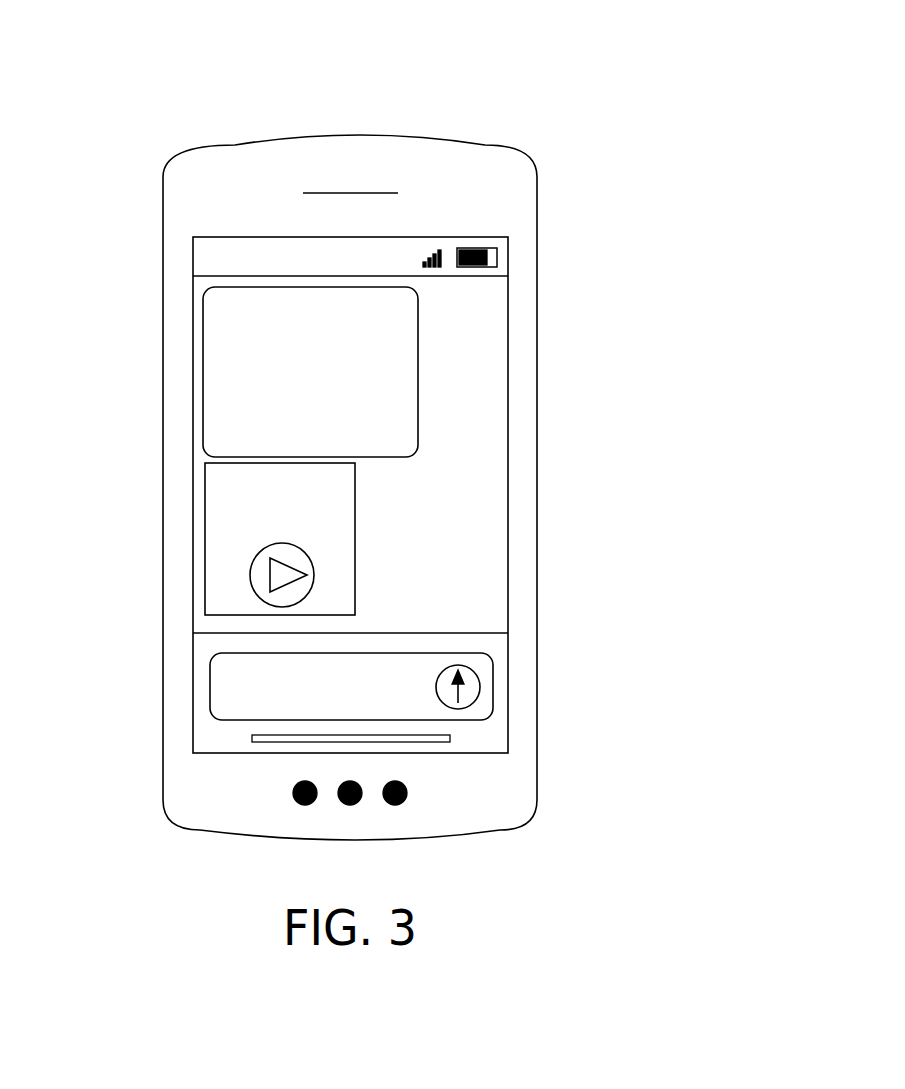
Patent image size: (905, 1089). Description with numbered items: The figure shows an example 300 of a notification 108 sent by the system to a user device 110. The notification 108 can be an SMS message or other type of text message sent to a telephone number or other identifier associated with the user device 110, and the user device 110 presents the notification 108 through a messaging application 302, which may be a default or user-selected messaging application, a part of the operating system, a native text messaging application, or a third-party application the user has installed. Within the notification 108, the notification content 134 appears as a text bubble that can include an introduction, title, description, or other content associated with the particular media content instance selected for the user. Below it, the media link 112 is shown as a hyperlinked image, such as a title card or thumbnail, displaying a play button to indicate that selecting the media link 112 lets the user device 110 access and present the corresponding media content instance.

The example of the notification 300 is at (196, 70).
The user device 110 is at (490, 183).
The notification 108 is at (452, 447).
The messaging application 302 is at (462, 598).
The notification content 134 is at (212, 373).
The media link 112 is at (227, 520).